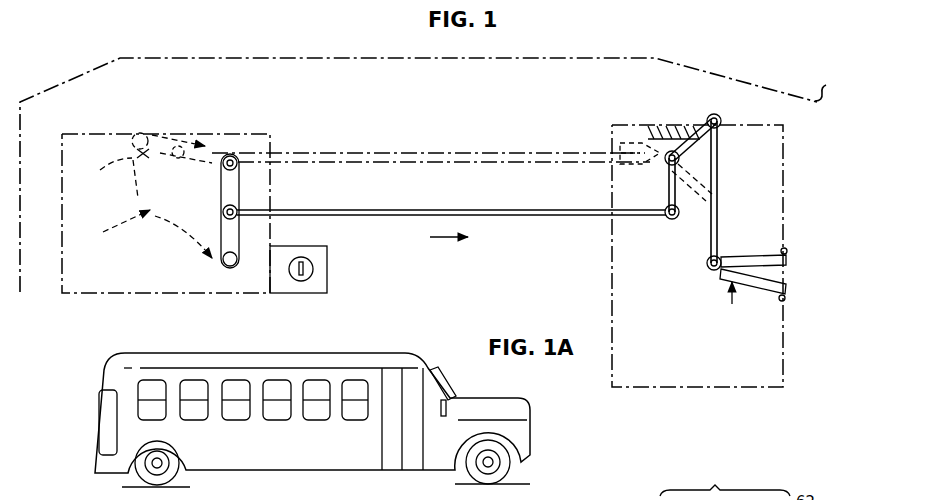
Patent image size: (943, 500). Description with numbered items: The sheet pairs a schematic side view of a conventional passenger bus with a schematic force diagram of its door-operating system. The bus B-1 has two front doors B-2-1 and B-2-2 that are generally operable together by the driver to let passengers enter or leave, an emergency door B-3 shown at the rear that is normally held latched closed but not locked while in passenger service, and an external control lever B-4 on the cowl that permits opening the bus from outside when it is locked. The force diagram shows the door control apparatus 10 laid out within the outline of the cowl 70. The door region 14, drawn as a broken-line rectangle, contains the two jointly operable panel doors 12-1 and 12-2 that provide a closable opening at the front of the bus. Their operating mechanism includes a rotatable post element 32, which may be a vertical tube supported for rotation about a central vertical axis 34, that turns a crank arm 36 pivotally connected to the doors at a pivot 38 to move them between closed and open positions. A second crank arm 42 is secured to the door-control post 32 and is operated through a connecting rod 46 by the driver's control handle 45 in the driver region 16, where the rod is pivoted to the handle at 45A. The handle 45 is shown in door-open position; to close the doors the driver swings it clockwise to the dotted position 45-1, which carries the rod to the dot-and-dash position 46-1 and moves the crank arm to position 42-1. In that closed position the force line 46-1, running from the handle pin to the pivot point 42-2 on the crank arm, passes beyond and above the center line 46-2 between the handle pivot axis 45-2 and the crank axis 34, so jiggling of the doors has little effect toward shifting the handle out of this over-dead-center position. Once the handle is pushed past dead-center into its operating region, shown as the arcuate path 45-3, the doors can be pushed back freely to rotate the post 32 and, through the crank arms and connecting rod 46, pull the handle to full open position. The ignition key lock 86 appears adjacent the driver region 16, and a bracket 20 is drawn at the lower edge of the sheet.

In FIG. 1, the cowl 70 is at (108, 56).
In FIG. 1, the driver region 16 is at (292, 116).
In FIG. 1, the door region 14 is at (589, 107).
In FIG. 1, the door control apparatus 10 is at (410, 142).
In FIG. 1, the driver's control handle 45 is at (222, 264).
In FIG. 1, the pivot of connecting rod to handle 45A is at (222, 216).
In FIG. 1, the dotted position of handle 45-1 is at (100, 170).
In FIG. 1, the handle pivot axis 45-2 is at (226, 164).
In FIG. 1, the arcuate path 45-3 is at (113, 234).
In FIG. 1, the connecting rod 46 is at (428, 210).
In FIG. 1, the dot and dash line position of connecting rod 46-1 is at (383, 150).
In FIG. 1, the center line 46-2 is at (348, 165).
In FIG. 1, the ignition key lock 86 is at (328, 284).
In FIG. 1, the position of crank arm 42-1 is at (612, 140).
In FIG. 1, the crank arm 36 is at (720, 146).
In FIG. 1, the rotatable post element 32 is at (665, 162).
In FIG. 1, the central vertical axis 34 is at (667, 166).
In FIG. 1, the crank arm 42 is at (676, 194).
In FIG. 1, the pivot point 42-2 is at (669, 222).
In FIG. 1, the pivot 38 is at (711, 272).
In FIG. 1, the panel door 12-1 is at (770, 255).
In FIG. 1, the panel door 12-2 is at (758, 290).
In FIG. 1A, the bus B-1 is at (535, 395).
In FIG. 1A, the emergency door B-3 is at (106, 421).
In FIG. 1A, the front door B-2-2 is at (388, 375).
In FIG. 1A, the front door B-2-1 is at (413, 375).
In FIG. 1A, the external control lever B-4 is at (453, 405).
In FIG. 1A, the bracket 20 is at (725, 483).